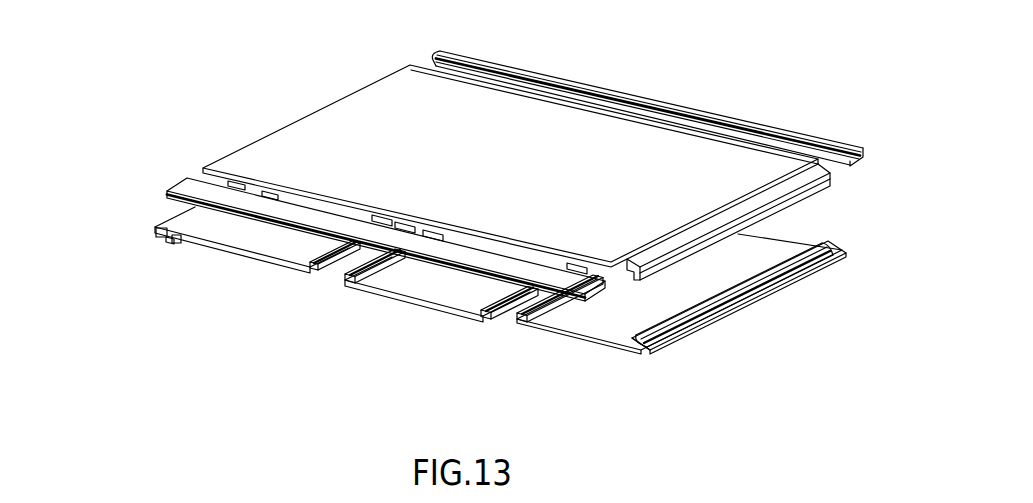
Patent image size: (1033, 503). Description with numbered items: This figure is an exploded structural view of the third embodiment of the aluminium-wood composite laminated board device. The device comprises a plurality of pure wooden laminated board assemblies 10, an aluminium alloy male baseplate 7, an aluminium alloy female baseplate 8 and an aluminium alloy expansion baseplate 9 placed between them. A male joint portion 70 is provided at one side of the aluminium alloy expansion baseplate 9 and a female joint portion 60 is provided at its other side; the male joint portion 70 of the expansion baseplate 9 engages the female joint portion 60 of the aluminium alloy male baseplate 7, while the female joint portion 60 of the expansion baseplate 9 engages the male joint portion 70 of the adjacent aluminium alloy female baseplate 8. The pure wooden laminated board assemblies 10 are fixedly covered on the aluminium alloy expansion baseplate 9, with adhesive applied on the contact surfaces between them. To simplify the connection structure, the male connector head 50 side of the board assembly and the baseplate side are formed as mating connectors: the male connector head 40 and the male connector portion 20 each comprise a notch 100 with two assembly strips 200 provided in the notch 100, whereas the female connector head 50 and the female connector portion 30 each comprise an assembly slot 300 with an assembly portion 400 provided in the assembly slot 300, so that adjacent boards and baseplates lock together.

The aluminium alloy male baseplate 7 is at (230, 290).
The aluminium alloy female baseplate 8 is at (588, 362).
The aluminium alloy expansion baseplate 9 is at (412, 320).
The pure wooden laminated board assembly 10 is at (596, 130).
The male connector portion 20 is at (155, 250).
The female connector portion 30 is at (719, 328).
The male connector head 40 is at (422, 240).
The female connector head 50 is at (803, 133).
The female joint portion 60 is at (312, 278).
The male joint portion 70 is at (345, 283).
The notch 100 is at (173, 241).
The assembly strip 200 is at (163, 233).
The assembly slot 300 is at (686, 336).
The assembly portion 400 is at (670, 355).